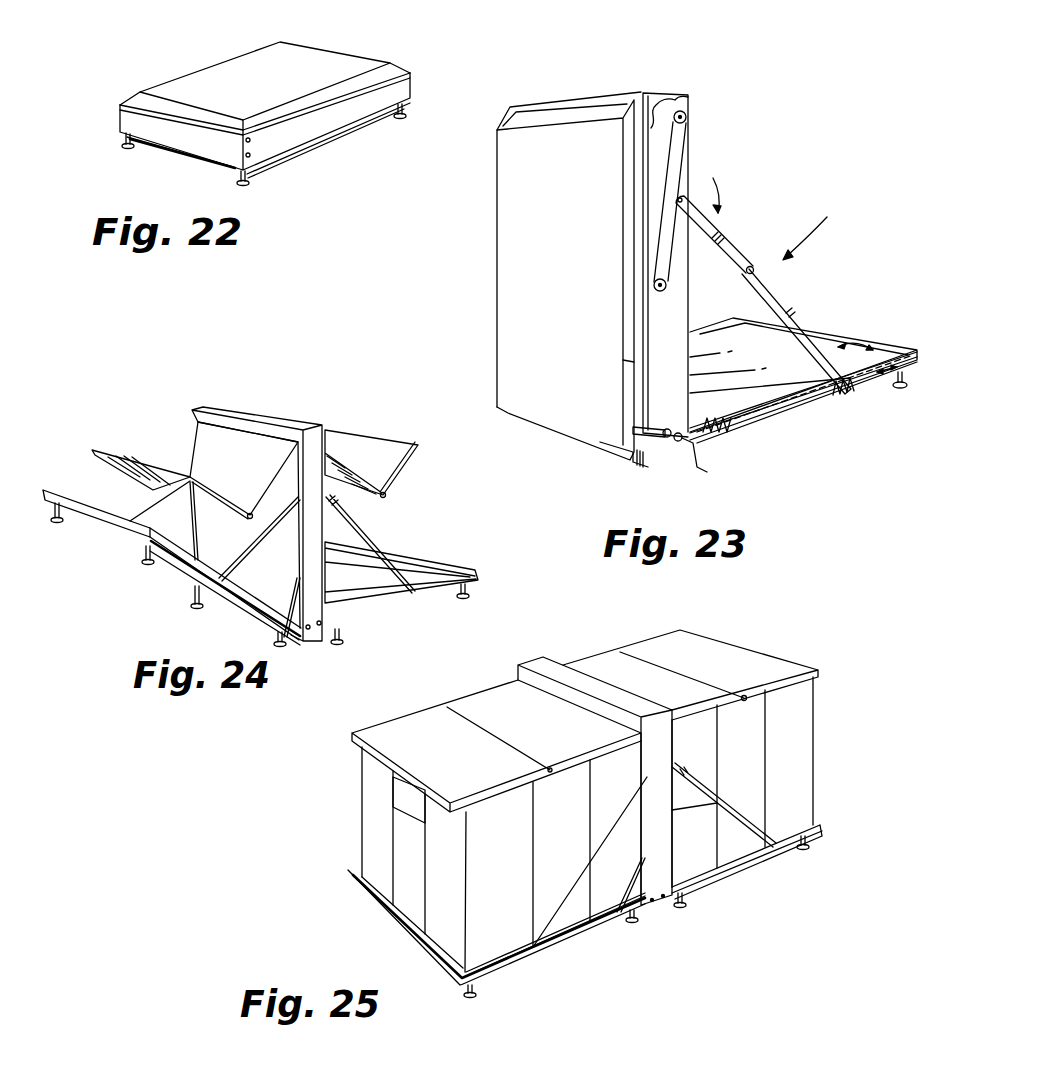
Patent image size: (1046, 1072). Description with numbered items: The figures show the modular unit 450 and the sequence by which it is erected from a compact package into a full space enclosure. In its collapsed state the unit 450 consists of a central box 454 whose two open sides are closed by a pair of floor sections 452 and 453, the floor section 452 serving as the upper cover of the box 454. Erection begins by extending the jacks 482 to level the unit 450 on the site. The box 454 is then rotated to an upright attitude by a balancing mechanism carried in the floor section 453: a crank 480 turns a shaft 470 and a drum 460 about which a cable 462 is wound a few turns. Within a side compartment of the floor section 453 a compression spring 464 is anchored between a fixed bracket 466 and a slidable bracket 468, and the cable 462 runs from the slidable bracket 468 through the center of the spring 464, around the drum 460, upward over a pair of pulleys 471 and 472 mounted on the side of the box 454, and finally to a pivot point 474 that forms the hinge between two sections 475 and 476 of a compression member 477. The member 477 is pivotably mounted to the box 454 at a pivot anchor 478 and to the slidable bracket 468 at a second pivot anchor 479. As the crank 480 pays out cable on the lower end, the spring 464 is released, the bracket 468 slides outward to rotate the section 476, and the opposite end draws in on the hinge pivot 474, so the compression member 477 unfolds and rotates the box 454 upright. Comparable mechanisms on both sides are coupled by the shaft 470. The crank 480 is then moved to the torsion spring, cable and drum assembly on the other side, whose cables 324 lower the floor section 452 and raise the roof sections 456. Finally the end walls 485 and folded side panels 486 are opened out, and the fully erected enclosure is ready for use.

In FIG. 22, the modular unit 450 is at (122, 29).
In FIG. 25, the modular unit 450 is at (787, 621).
In FIG. 22, the floor section 452 is at (337, 55).
In FIG. 23, the floor section 452 is at (497, 280).
In FIG. 24, the floor section 452 is at (173, 587).
In FIG. 25, the floor section 452 is at (405, 930).
In FIG. 22, the floor section 453 is at (337, 133).
In FIG. 23, the floor section 453 is at (737, 361).
In FIG. 24, the floor section 453 is at (413, 553).
In FIG. 25, the floor section 453 is at (813, 827).
In FIG. 22, the box 454 is at (127, 120).
In FIG. 23, the box 454 is at (667, 90).
In FIG. 24, the box 454 is at (243, 413).
In FIG. 25, the box 454 is at (663, 905).
In FIG. 24, the roof sections 456 is at (130, 453).
In FIG. 25, the roof sections 456 is at (773, 667).
In FIG. 23, the drum 460 is at (677, 445).
In FIG. 23, the cable 462 is at (660, 358).
In FIG. 23, the compression spring 464 is at (780, 417).
In FIG. 23, the fixed bracket 466 is at (707, 440).
In FIG. 23, the slidable bracket 468 is at (840, 387).
In FIG. 23, the shaft 470 is at (637, 435).
In FIG. 23, the pulley 471 is at (687, 118).
In FIG. 23, the pulley 472 is at (654, 286).
In FIG. 23, the pivot point 474 is at (747, 268).
In FIG. 23, the section of compression member 475 is at (720, 230).
In FIG. 23, the section of compression member 476 is at (787, 293).
In FIG. 23, the compression member 477 is at (825, 223).
In FIG. 25, the compression member 477 is at (733, 803).
In FIG. 23, the pivot anchor 478 is at (687, 177).
In FIG. 23, the second pivot anchor 479 is at (873, 358).
In FIG. 23, the crank 480 is at (708, 471).
In FIG. 22, the jacks 482 is at (131, 146).
In FIG. 23, the jacks 482 is at (900, 380).
In FIG. 24, the jacks 482 is at (60, 523).
In FIG. 25, the jacks 482 is at (805, 848).
In FIG. 25, the end walls 485 is at (373, 835).
In FIG. 25, the folded side panels 486 is at (563, 917).
In FIG. 24, the cables 324 is at (238, 560).
In FIG. 25, the cables 324 is at (583, 890).